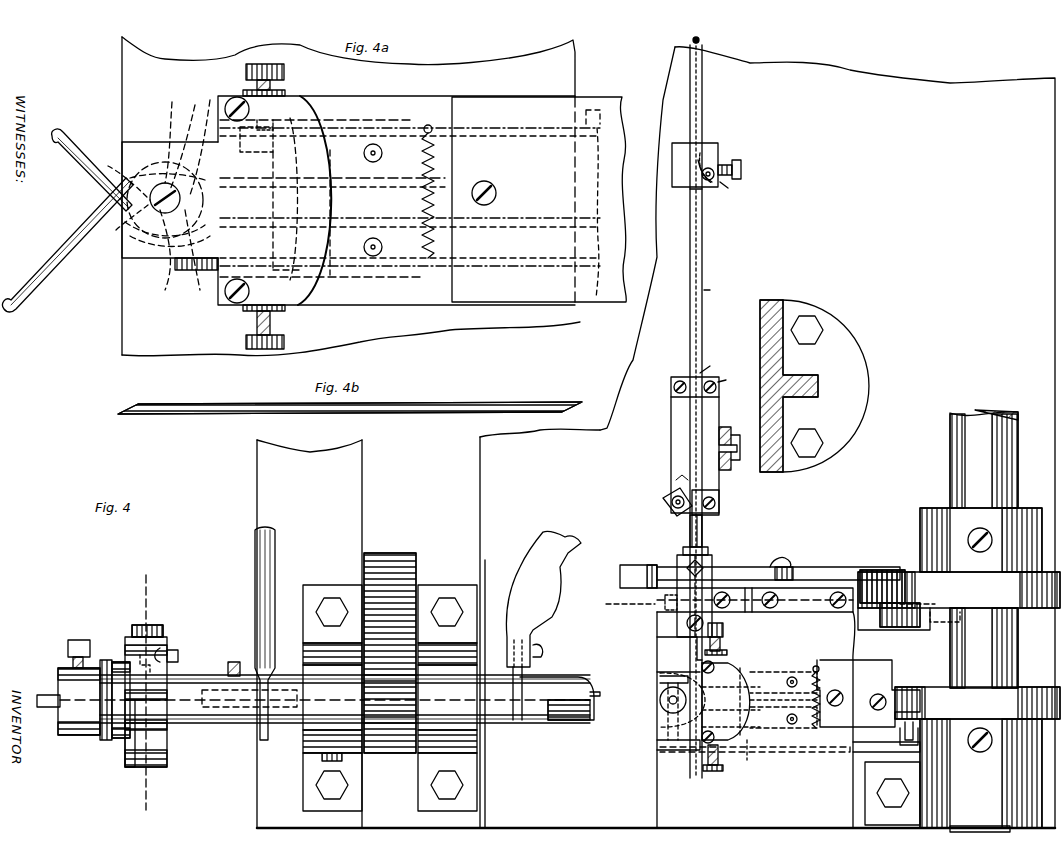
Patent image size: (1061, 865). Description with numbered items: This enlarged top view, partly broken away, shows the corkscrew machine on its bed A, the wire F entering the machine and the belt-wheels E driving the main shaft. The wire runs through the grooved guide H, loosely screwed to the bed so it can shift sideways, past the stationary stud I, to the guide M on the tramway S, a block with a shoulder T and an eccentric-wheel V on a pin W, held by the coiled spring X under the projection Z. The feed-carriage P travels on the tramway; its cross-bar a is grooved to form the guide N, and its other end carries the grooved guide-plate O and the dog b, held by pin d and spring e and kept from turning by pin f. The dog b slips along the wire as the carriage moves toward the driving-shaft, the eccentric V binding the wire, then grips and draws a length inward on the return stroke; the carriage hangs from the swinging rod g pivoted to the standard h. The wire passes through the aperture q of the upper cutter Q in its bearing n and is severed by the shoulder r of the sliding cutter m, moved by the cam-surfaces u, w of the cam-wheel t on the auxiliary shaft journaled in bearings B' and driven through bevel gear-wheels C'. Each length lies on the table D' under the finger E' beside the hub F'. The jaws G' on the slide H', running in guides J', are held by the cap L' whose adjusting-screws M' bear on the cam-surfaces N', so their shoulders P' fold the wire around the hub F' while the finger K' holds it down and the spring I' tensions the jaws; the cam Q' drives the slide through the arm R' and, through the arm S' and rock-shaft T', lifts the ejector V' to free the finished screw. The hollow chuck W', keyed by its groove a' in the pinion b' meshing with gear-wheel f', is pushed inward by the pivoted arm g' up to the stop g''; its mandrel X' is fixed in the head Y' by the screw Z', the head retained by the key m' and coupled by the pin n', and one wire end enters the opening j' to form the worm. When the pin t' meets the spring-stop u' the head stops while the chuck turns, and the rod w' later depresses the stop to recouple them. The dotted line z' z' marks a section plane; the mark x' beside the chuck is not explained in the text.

In FIG. 4, the bed A is at (827, 437).
In FIG. 4A, the wire F is at (92, 170).
In FIG. 4, the wire F is at (705, 407).
In FIG. 4A, the belt-wheels E is at (68, 245).
In FIG. 4, the tramway S is at (712, 288).
In FIG. 4, the shoulder T is at (695, 165).
In FIG. 4, the projection Z is at (705, 160).
In FIG. 4, the coiled spring X is at (729, 159).
In FIG. 4, the pin W is at (732, 188).
In FIG. 4, the eccentric-wheel V is at (713, 185).
In FIG. 4, the guide M is at (682, 193).
In FIG. 4, the guide N is at (707, 365).
In FIG. 4, the cross-bar a is at (726, 377).
In FIG. 4, the feed-carriage P is at (695, 445).
In FIG. 4, the standard h is at (814, 386).
In FIG. 4, the swinging rod g is at (729, 452).
In FIG. 4, the pin f is at (680, 485).
In FIG. 4, the coiled spring e is at (673, 499).
In FIG. 4, the dog b is at (666, 509).
In FIG. 4, the pin d is at (684, 508).
In FIG. 4, the guide-plate O is at (712, 502).
In FIG. 4, the upper cutter Q is at (703, 535).
In FIG. 4, the central aperture q is at (686, 546).
In FIG. 4, the bearing n is at (705, 592).
In FIG. 4, the stop g'' is at (760, 572).
In FIG. 4, the movable lower cutter m is at (746, 601).
In FIG. 4, the cutting-shoulder r is at (728, 620).
In FIG. 4, the finger E' is at (756, 720).
In FIG. 4A, the ejector V' is at (169, 134).
In FIG. 4, the ejector V' is at (664, 708).
In FIG. 4A, the hub F' is at (123, 177).
In FIG. 4B, the hub F' is at (350, 416).
In FIG. 4, the hub F' is at (674, 700).
In FIG. 4A, the cap L' is at (318, 190).
In FIG. 4, the cap L' is at (731, 702).
In FIG. 4A, the jaws G' is at (285, 201).
In FIG. 4, the jaws G' is at (783, 700).
In FIG. 4, the bevel gear-wheels C' is at (783, 713).
In FIG. 4, the coiled spring I' is at (825, 697).
In FIG. 4A, the engaging-arm R' is at (539, 199).
In FIG. 4, the engaging-arm R' is at (790, 696).
In FIG. 4A, the adjusting-screws M' is at (274, 206).
In FIG. 4, the adjusting-screws M' is at (723, 709).
In FIG. 4A, the cam-surfaces N' is at (285, 201).
In FIG. 4, the cam-surfaces N' is at (756, 757).
In FIG. 4A, the guides J' is at (409, 200).
In FIG. 4, the guides J' is at (793, 700).
In FIG. 4A, the slide H' is at (401, 197).
In FIG. 4, the slide H' is at (904, 711).
In FIG. 4A, the guide H is at (593, 204).
In FIG. 4A, the table D' is at (170, 239).
In FIG. 4, the table D' is at (647, 769).
In FIG. 4A, the shoulders P' is at (167, 200).
In FIG. 4A, the guide I is at (419, 191).
In FIG. 4A, the finger K' is at (122, 227).
In FIG. 4, the cam-wheel t is at (959, 549).
In FIG. 4, the cam-surface u is at (890, 598).
In FIG. 4, the cam-surface w is at (909, 619).
In FIG. 4, the cam Q' is at (977, 703).
In FIG. 4, the bearings B' is at (981, 775).
In FIG. 4, the rock-shaft T' is at (886, 783).
In FIG. 4, the arm S' is at (926, 733).
In FIG. 4, the hollow chuck W' is at (325, 705).
In FIG. 4, the worm-mandrel X' is at (47, 711).
In FIG. 4, the head Y' is at (79, 701).
In FIG. 4, the screw Z' is at (79, 654).
In FIG. 4, the key m' is at (133, 702).
In FIG. 4, the pin n' is at (152, 622).
In FIG. 4, the pin x' is at (142, 641).
In FIG. 4, the pin t' is at (174, 654).
In FIG. 4, the dotted section line z' is at (144, 692).
In FIG. 4, the longitudinal groove a' is at (249, 698).
In FIG. 4, the spring-stop u' is at (233, 661).
In FIG. 4, the rod w' is at (252, 633).
In FIG. 4, the pinion-wheel b' is at (390, 698).
In FIG. 4, the gear-wheel f' is at (398, 653).
In FIG. 4, the pivoted arm g' is at (543, 625).
In FIG. 4, the right-angular opening j' is at (563, 708).